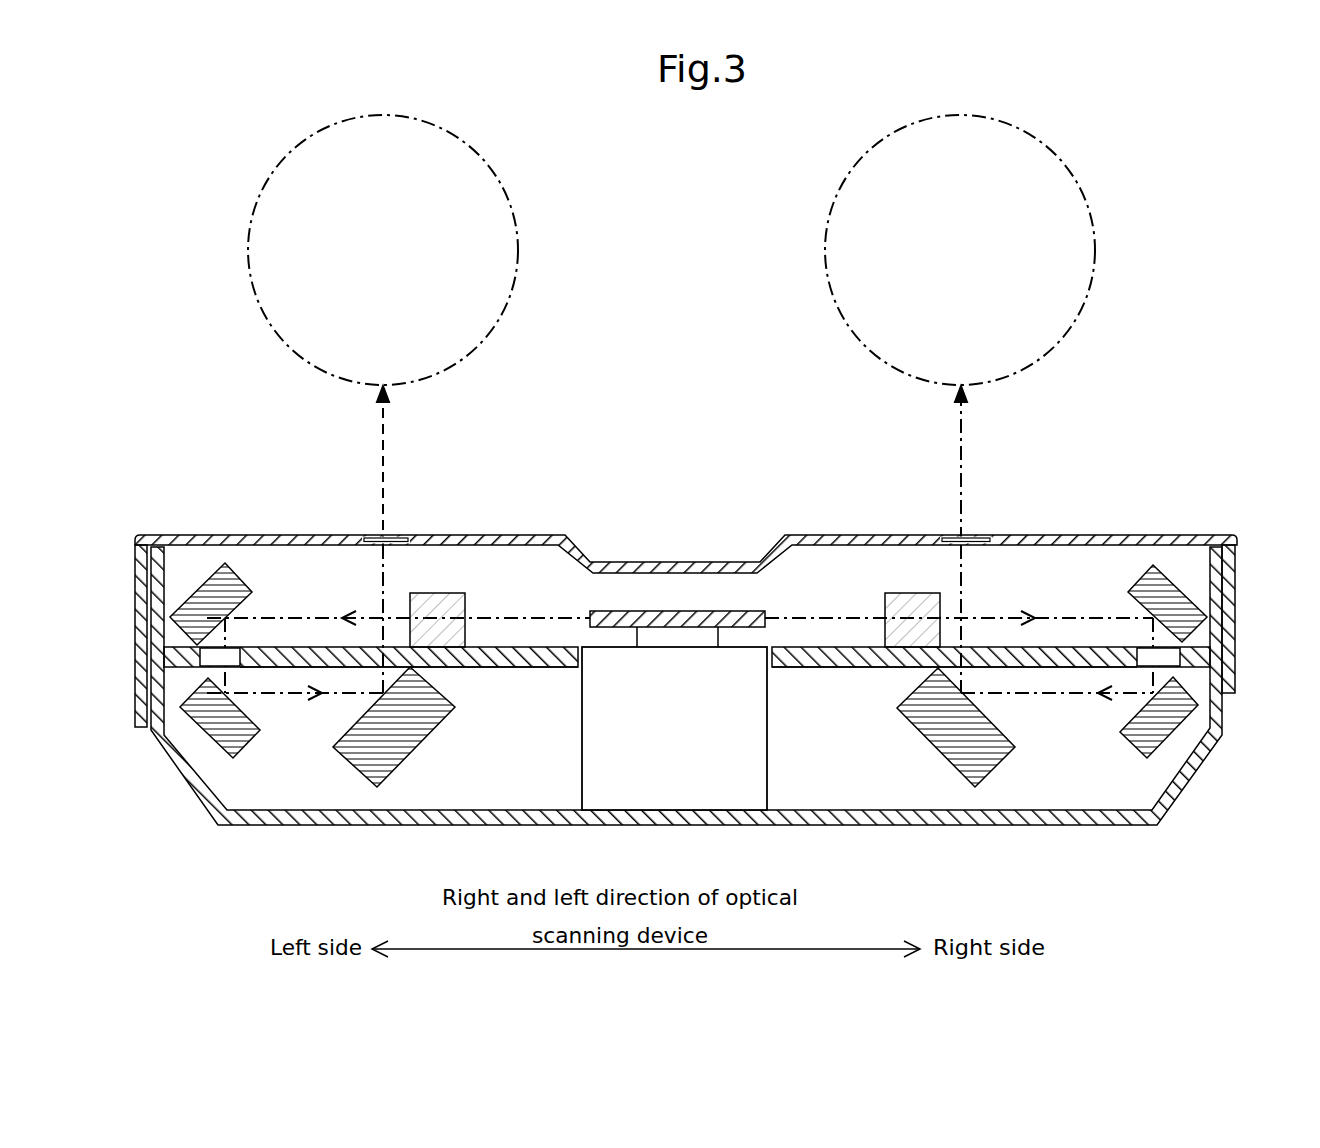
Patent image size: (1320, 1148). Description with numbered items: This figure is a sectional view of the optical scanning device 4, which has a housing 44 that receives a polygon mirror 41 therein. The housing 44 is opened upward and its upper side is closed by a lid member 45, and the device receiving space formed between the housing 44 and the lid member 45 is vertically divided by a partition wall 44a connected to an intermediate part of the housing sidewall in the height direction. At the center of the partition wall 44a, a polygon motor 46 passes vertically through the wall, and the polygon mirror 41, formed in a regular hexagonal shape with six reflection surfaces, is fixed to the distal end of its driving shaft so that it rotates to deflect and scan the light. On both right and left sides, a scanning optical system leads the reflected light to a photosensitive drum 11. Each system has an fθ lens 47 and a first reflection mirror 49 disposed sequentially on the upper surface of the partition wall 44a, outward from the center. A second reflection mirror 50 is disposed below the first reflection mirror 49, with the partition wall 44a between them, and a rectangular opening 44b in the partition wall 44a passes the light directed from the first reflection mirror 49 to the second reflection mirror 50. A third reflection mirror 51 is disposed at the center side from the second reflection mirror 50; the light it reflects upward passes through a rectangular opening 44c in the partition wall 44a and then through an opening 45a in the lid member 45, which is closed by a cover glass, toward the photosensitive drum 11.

The optical scanning device 4 is at (704, 624).
The photosensitive drum 11 is at (383, 116).
The polygon mirror 41 is at (685, 610).
The housing 44 is at (1237, 695).
The partition wall 44a is at (812, 655).
The rectangular opening 44b is at (242, 648).
The rectangular opening 44c is at (370, 665).
The lid member 45 is at (686, 505).
The opening 45a is at (398, 537).
The polygon motor 46 is at (767, 745).
The fθ lens 47 is at (447, 590).
The first reflection mirror 49 is at (213, 572).
The second reflection mirror 50 is at (205, 735).
The third reflection mirror 51 is at (377, 748).